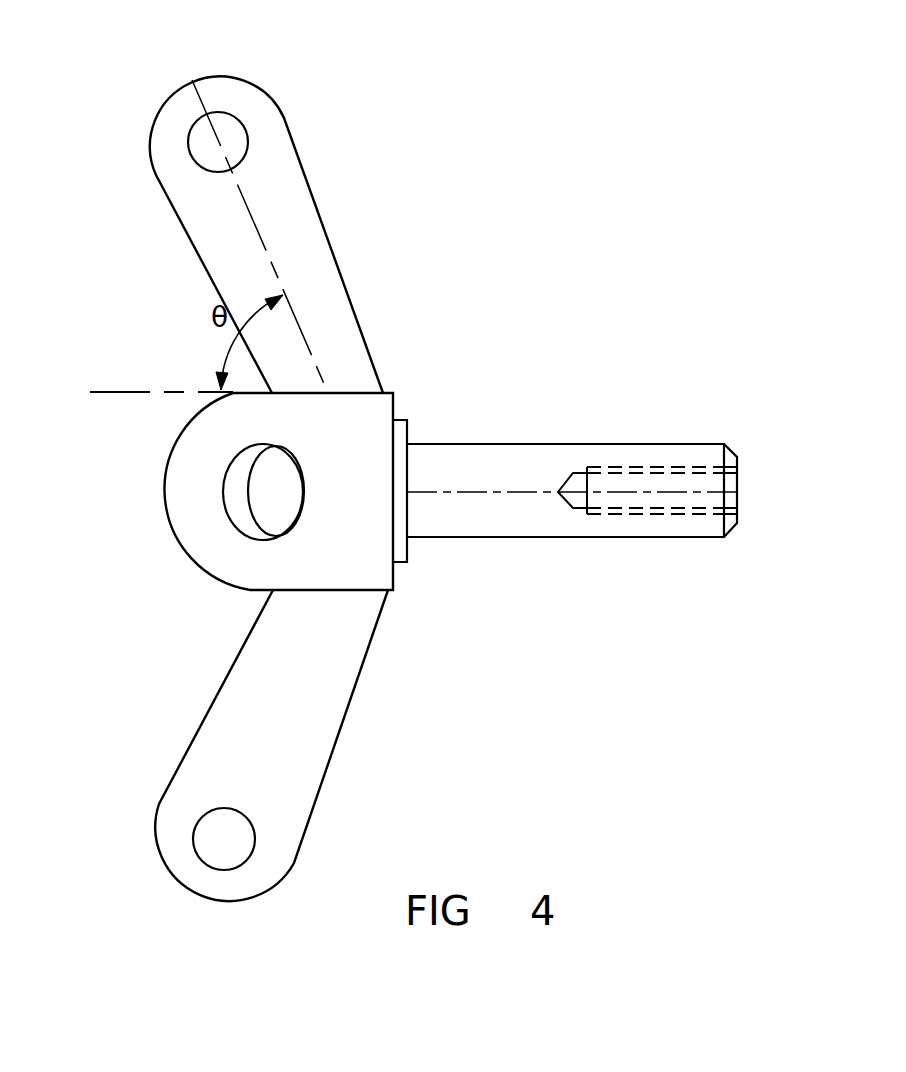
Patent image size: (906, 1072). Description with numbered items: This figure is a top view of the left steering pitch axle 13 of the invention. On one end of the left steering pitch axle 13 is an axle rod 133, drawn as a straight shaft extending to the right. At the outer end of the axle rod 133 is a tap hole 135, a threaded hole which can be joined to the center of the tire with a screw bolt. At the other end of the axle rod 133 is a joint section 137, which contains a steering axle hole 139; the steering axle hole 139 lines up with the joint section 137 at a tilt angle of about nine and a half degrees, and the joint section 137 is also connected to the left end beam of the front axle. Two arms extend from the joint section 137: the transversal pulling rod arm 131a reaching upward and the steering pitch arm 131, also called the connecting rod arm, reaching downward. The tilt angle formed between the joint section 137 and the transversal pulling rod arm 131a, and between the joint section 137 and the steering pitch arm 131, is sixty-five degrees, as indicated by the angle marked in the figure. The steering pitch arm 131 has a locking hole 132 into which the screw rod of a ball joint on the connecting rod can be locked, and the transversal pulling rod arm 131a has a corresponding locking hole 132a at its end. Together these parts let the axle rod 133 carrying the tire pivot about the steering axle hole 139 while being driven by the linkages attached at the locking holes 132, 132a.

The left steering pitch axle 13 is at (599, 433).
The steering pitch arm 131 is at (219, 745).
The transversal pulling rod arm 131a is at (315, 234).
The locking hole 132 is at (212, 830).
The locking hole 132a is at (228, 141).
The axle rod 133 is at (452, 473).
The tap hole 135 is at (695, 487).
The joint section 137 is at (220, 491).
The steering axle hole 139 is at (273, 510).